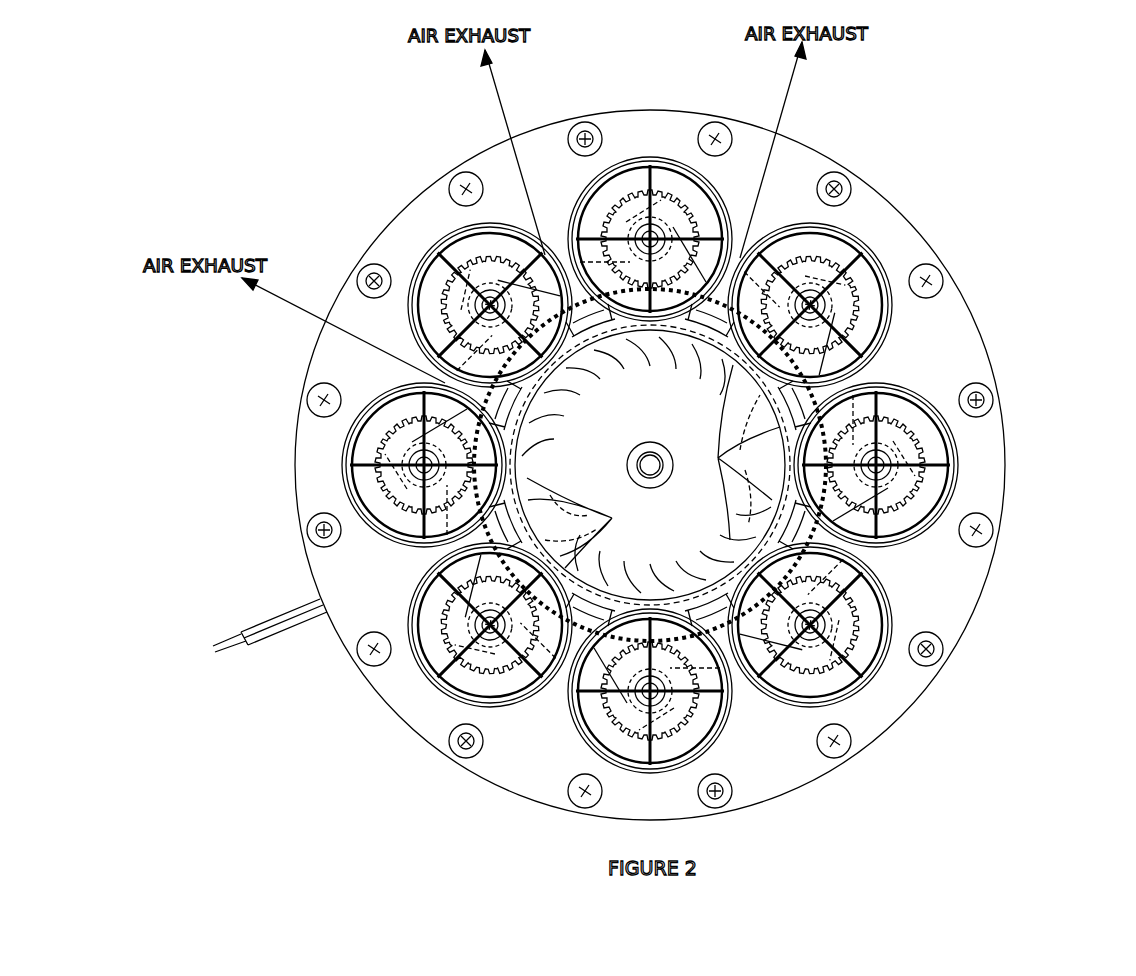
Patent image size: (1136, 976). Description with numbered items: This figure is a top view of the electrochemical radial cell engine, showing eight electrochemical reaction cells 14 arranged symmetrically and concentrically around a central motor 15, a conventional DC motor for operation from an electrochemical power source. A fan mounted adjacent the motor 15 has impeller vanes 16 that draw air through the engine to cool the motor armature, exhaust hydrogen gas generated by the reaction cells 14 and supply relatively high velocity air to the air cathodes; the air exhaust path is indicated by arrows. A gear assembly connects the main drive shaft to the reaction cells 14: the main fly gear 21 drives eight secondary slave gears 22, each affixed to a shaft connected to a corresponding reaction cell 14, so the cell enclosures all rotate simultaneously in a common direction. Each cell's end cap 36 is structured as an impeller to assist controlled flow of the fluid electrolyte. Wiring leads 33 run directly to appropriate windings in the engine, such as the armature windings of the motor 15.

The electrochemical reaction cell 14 is at (467, 250).
The motor 15 is at (654, 408).
The impeller vanes 16 is at (651, 465).
The main fly gear 21 is at (862, 565).
The secondary slave gear 22 is at (445, 290).
The wiring leads 33 is at (262, 642).
The end cap 36 is at (560, 262).